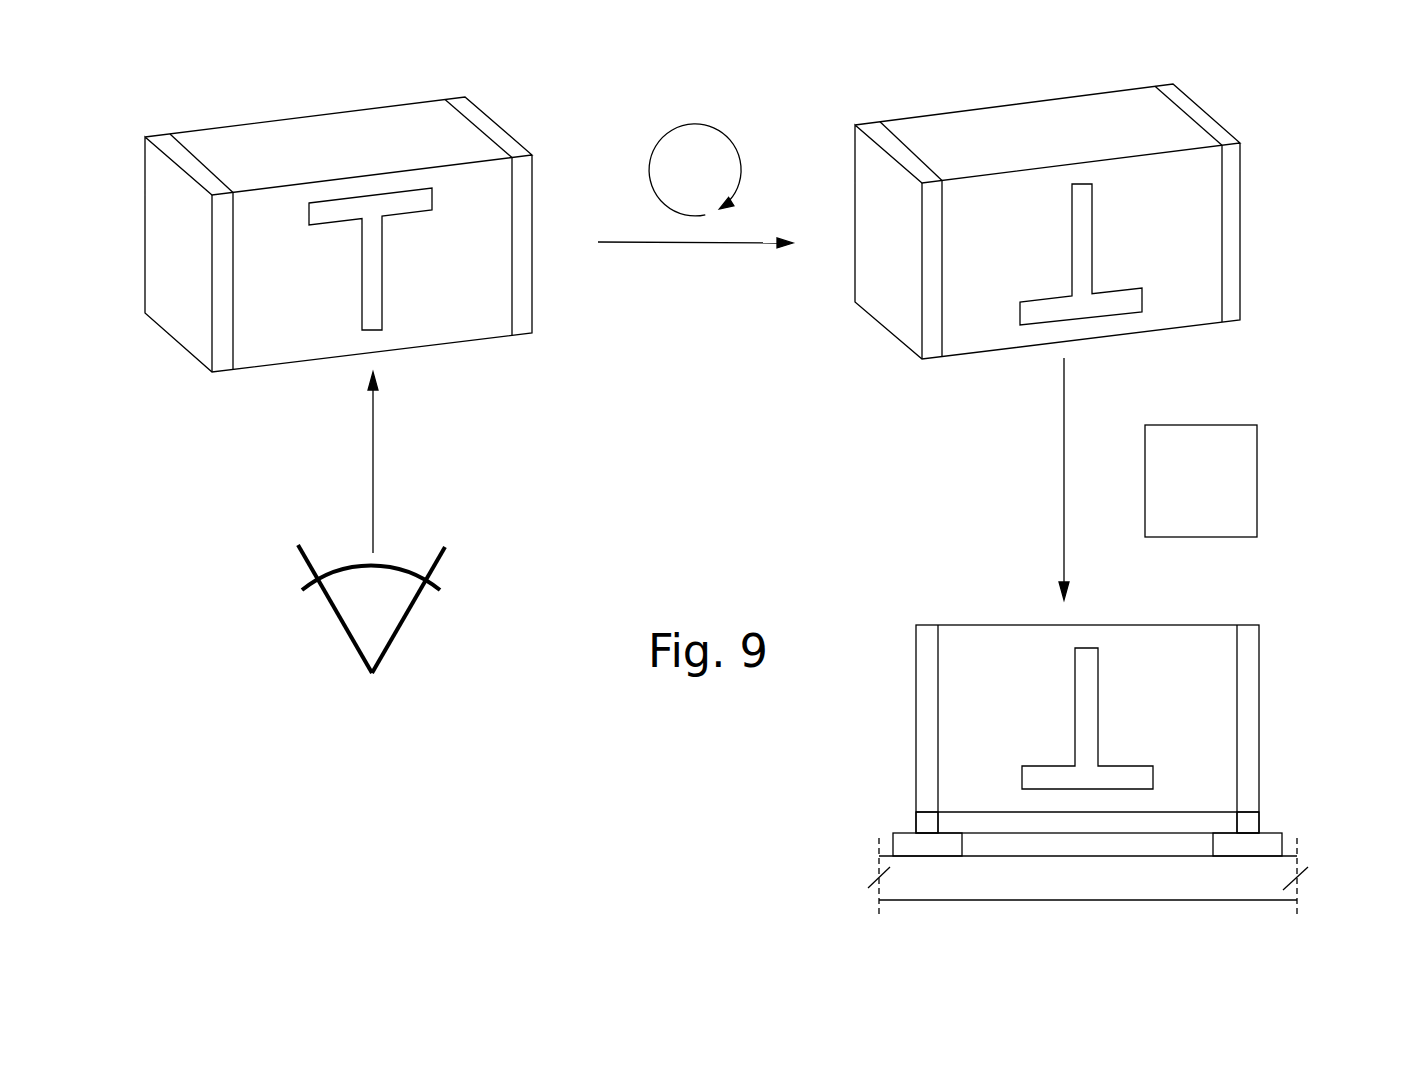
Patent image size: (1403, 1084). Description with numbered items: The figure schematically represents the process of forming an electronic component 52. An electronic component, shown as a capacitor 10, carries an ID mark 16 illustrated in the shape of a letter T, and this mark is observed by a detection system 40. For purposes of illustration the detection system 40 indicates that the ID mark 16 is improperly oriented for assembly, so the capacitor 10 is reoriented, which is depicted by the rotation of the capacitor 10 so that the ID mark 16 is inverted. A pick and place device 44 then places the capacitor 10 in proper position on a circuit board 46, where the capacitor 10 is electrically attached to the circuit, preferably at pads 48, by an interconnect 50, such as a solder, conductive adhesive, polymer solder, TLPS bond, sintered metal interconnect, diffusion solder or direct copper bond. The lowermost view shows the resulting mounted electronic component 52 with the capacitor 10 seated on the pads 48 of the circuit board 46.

The capacitor 10 is at (513, 108).
The ID mark 16 is at (372, 300).
The detection system 40 is at (402, 627).
The pick and place device 44 is at (1202, 463).
The circuit board 46 is at (1086, 875).
The pads 48 is at (943, 845).
The interconnect 50 is at (928, 822).
The electronic component 52 is at (1272, 743).